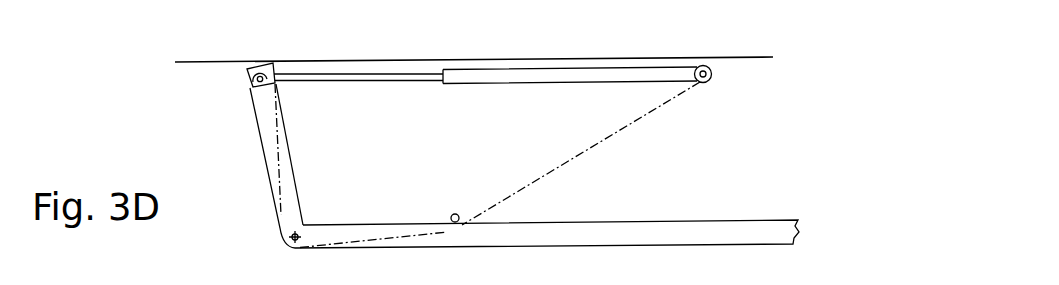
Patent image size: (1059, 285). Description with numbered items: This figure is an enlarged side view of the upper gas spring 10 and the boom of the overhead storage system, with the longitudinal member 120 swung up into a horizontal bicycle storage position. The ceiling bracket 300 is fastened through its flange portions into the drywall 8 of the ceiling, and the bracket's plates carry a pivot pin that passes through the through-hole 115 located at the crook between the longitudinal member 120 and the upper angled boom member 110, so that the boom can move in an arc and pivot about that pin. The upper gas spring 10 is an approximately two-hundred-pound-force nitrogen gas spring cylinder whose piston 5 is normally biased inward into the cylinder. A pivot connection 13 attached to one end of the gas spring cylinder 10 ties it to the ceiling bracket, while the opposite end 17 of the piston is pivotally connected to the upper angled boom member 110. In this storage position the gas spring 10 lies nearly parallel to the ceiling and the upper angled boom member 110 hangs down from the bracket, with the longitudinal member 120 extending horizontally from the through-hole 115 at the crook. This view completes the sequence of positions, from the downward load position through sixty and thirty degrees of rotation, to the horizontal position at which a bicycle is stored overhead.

The drywall 8 is at (212, 63).
The opposite end of piston 17 is at (273, 63).
The piston 5 is at (400, 75).
The upper gas spring 10 is at (550, 68).
The pivot connection 13 is at (712, 63).
The upper angled boom member 110 is at (267, 170).
The through-hole 115 is at (298, 235).
The longitudinal member 120 is at (627, 220).
The ceiling bracket 300 is at (663, 107).